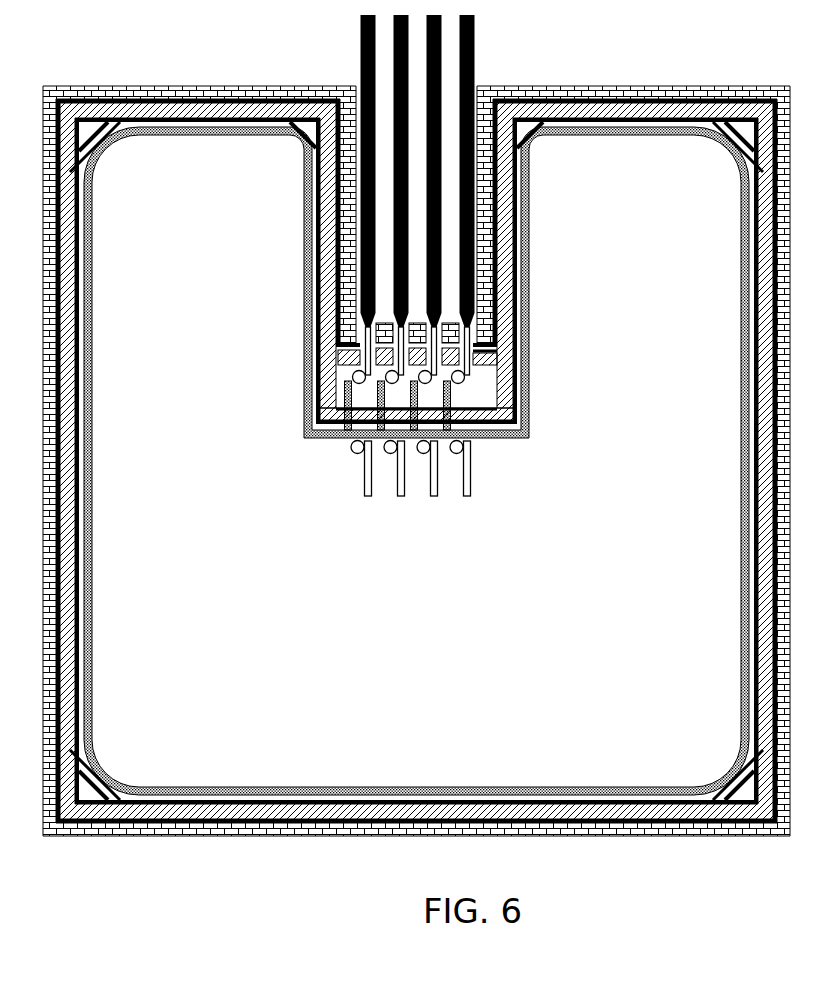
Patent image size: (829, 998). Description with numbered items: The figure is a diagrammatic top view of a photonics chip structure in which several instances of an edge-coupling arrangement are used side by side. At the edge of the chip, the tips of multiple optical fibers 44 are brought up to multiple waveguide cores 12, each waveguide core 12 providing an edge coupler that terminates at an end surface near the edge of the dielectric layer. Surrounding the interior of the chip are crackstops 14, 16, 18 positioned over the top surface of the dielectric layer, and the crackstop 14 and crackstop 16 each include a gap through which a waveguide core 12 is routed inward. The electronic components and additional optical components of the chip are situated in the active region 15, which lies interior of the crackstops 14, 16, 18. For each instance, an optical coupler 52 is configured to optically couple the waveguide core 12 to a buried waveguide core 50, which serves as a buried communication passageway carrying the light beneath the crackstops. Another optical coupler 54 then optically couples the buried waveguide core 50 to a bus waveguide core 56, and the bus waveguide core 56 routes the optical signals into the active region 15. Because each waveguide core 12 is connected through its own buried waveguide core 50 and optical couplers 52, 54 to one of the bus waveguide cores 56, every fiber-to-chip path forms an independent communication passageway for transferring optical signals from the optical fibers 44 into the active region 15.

The waveguide core 12 is at (475, 351).
The crackstop 14 is at (348, 202).
The active region 15 is at (431, 630).
The crackstop 16 is at (348, 360).
The crackstop 18 is at (368, 411).
The optical fiber 44 is at (473, 278).
The buried waveguide core 50 is at (449, 397).
The optical coupler 52 is at (352, 377).
The optical coupler 54 is at (353, 449).
The bus waveguide core 56 is at (433, 472).